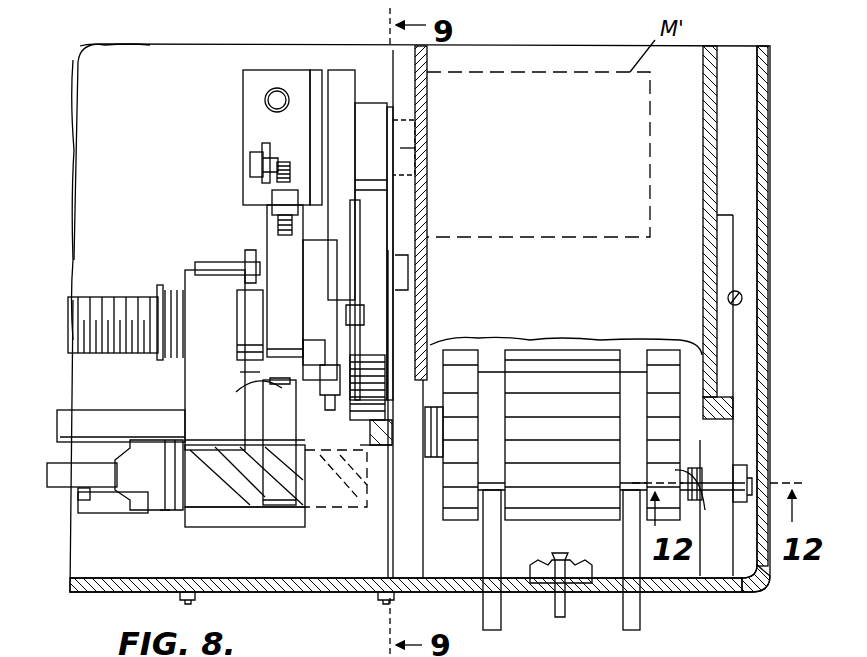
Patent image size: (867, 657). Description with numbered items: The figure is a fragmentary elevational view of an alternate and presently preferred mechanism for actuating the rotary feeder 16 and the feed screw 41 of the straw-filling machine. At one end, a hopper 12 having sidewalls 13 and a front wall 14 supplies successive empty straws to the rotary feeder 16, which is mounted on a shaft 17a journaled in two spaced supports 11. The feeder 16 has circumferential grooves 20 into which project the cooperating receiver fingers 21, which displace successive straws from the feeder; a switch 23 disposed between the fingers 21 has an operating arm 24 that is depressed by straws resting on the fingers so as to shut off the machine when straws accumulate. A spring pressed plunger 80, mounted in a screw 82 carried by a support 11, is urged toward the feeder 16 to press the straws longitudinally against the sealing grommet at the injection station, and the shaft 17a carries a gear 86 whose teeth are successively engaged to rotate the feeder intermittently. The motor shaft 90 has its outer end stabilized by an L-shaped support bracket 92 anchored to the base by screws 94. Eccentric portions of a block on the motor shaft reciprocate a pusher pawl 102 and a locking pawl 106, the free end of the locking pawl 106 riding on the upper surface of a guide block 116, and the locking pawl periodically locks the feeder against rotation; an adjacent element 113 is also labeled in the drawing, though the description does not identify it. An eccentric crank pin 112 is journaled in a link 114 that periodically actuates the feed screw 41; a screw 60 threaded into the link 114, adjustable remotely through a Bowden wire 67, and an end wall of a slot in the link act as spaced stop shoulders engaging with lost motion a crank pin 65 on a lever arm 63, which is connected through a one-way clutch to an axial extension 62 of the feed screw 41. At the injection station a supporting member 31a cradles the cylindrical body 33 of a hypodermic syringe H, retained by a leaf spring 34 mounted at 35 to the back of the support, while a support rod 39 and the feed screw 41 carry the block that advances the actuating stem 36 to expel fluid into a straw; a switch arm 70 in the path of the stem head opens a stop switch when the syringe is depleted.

The supports 11 is at (413, 556).
The hopper 12 is at (724, 123).
The sidewalls 13 is at (705, 252).
The front wall 14 is at (538, 173).
The rotary feeder 16 is at (568, 352).
The circumferential grooves 20 is at (488, 372).
The receiver fingers 21 is at (492, 549).
The switch 23 is at (578, 584).
The operating arm 24 is at (553, 602).
The supporting member 31a is at (232, 520).
The cylindrical body 33 is at (323, 508).
The leaf spring 34 is at (279, 490).
The mounting 35 is at (258, 390).
The actuating stem 36 is at (55, 484).
The support rod 39 is at (68, 410).
The feed screw 41 is at (70, 298).
The screw 60 is at (270, 216).
The axial extension 62 is at (240, 320).
The lever arm 63 is at (245, 372).
The crank pin 65 is at (312, 338).
The Bowden wire 67 is at (250, 165).
The switch arm 70 is at (86, 500).
The spring pressed plunger 80 is at (690, 490).
The screw 82 is at (700, 480).
The gear 86 is at (382, 450).
The motor shaft 90 is at (420, 140).
The L-shaped support bracket 92 is at (315, 80).
The screws 94 is at (275, 97).
The pusher pawl 102 is at (368, 215).
The locking pawl 106 is at (362, 305).
The eccentric crank pin 112 is at (262, 148).
The arm 113 is at (410, 272).
The link 114 is at (280, 246).
The guide block 116 is at (392, 223).
The shaft 17a is at (378, 426).
The hypodermic syringe H is at (166, 514).